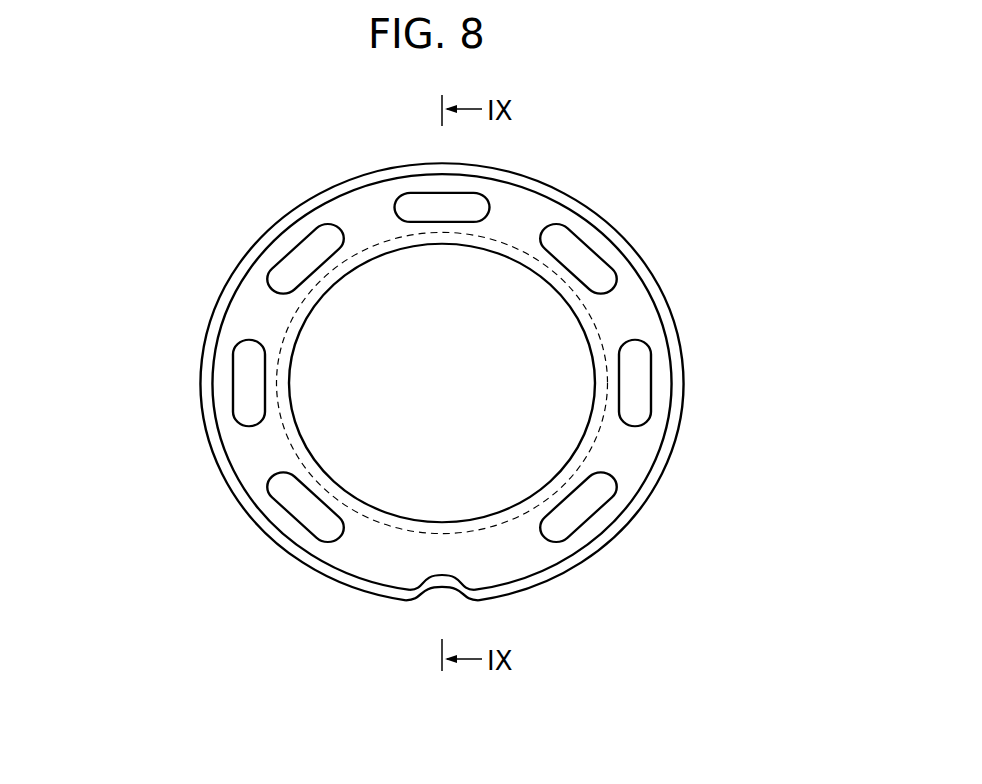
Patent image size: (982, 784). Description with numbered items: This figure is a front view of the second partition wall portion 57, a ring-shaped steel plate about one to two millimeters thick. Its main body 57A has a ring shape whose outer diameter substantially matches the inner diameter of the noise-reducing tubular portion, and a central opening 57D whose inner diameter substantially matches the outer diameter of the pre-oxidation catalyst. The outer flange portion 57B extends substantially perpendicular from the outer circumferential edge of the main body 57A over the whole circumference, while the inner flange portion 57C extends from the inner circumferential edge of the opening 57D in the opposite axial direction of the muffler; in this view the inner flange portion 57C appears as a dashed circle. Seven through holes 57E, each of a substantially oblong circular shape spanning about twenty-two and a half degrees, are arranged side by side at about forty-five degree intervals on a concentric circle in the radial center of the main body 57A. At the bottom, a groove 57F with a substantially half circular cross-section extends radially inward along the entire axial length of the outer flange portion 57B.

The second partition wall portion 57 is at (292, 168).
The main body 57A is at (440, 408).
The outer flange portion 57B is at (637, 262).
The inner flange portion 57C is at (605, 378).
The opening 57D is at (320, 462).
The through holes 57E is at (457, 221).
The groove 57F is at (440, 592).